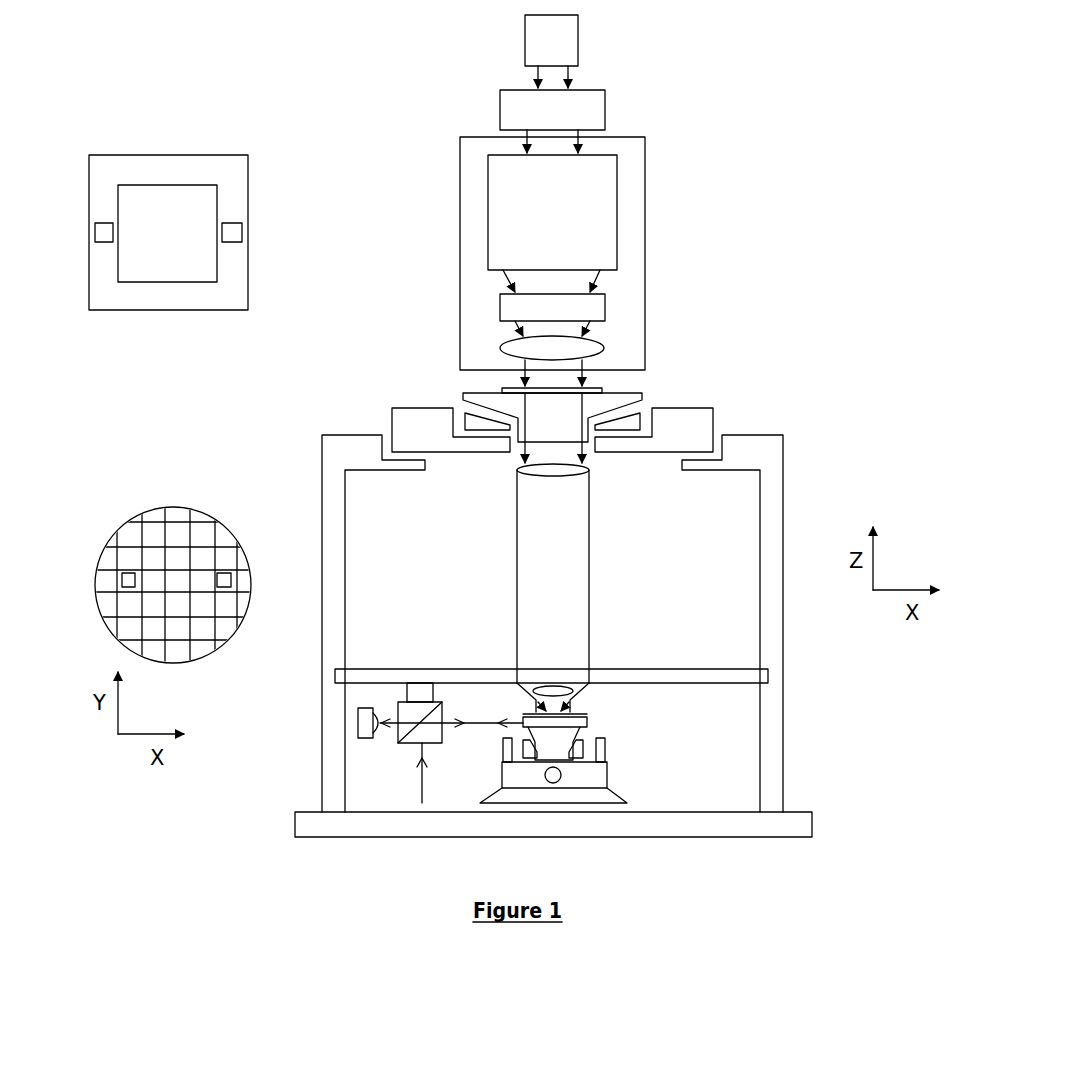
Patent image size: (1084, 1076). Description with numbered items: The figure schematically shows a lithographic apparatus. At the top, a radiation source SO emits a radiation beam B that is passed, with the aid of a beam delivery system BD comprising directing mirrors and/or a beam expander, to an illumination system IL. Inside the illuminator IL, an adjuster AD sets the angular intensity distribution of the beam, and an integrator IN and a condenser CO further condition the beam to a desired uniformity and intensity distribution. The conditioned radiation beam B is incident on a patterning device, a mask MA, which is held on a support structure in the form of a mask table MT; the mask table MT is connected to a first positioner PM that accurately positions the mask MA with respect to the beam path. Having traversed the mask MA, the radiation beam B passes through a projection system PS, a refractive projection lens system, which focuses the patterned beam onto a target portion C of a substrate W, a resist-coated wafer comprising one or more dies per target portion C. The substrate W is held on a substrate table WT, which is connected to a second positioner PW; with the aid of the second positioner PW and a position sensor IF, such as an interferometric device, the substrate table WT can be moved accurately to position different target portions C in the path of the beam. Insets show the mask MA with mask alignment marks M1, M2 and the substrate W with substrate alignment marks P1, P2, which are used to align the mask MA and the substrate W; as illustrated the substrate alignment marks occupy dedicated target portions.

The radiation source SO is at (578, 43).
The beam delivery system BD is at (605, 120).
The illumination system IL is at (645, 170).
The adjuster AD is at (617, 222).
The integrator IN is at (605, 305).
The condenser CO is at (604, 350).
The radiation beam B is at (555, 382).
The patterning device MA is at (260, 264).
The mask alignment mark M1 is at (233, 222).
The mask alignment mark M2 is at (102, 222).
The support structure MT is at (645, 402).
The first positioner PM is at (392, 408).
The projection system PS is at (590, 562).
The substrate W is at (264, 578).
The target portion C is at (163, 507).
The substrate alignment mark P1 is at (128, 572).
The substrate alignment mark P2 is at (224, 572).
The substrate table WT is at (587, 722).
The second positioner PW is at (607, 780).
The position sensor IF is at (388, 753).